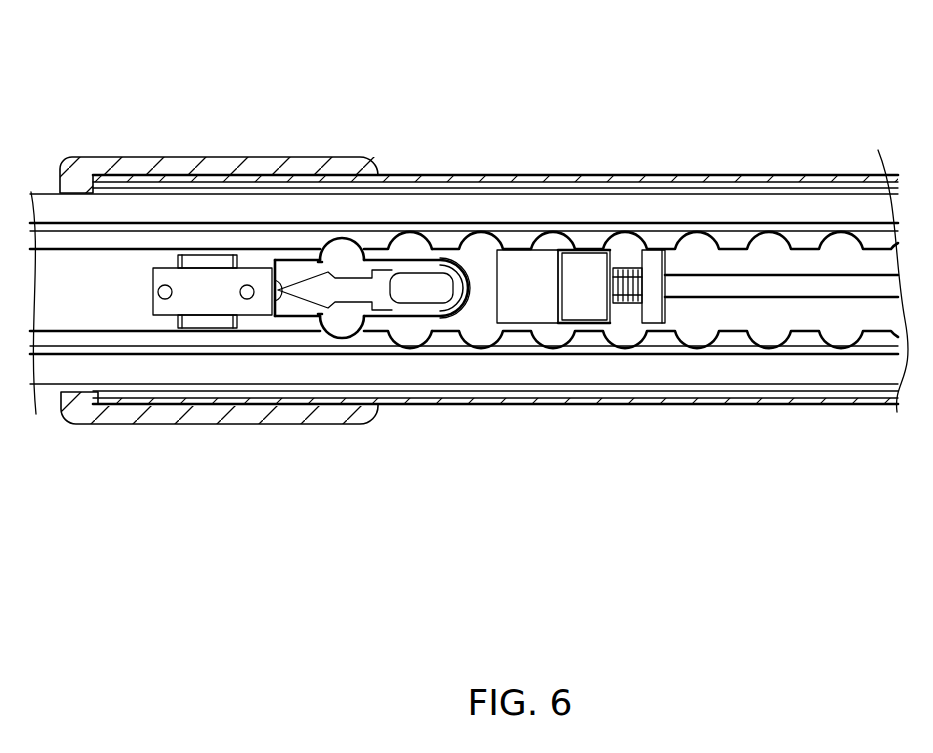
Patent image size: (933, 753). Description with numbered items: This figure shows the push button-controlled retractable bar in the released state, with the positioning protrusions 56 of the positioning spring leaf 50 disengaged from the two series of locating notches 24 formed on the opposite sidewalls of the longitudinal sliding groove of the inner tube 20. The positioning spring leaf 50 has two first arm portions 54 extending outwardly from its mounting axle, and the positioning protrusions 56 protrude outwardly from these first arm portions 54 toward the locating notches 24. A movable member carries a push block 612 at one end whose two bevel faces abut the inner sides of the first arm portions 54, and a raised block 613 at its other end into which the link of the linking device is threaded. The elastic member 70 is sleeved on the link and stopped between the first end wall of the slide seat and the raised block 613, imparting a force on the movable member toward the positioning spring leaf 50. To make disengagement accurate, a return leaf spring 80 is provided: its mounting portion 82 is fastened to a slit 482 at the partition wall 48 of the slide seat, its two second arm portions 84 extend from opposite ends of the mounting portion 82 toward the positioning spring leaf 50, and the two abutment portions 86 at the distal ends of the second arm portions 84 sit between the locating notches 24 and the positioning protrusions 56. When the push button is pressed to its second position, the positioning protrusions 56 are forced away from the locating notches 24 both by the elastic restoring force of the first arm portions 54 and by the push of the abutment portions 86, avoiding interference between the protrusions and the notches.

The inner tube 20 is at (833, 200).
The return leaf spring 80 is at (257, 252).
The positioning spring leaf 50 is at (289, 309).
The first arm portions 54 is at (380, 262).
The positioning protrusions 56 is at (347, 258).
The abutment portions 86 is at (333, 248).
The locating notches 24 is at (320, 250).
The second arm portions 84 is at (408, 258).
The push block 612 is at (441, 283).
The mounting portion 82 is at (452, 320).
The slit 482 is at (474, 318).
The partition wall 48 is at (500, 294).
The raised block 613 is at (577, 268).
The elastic member 70 is at (633, 278).